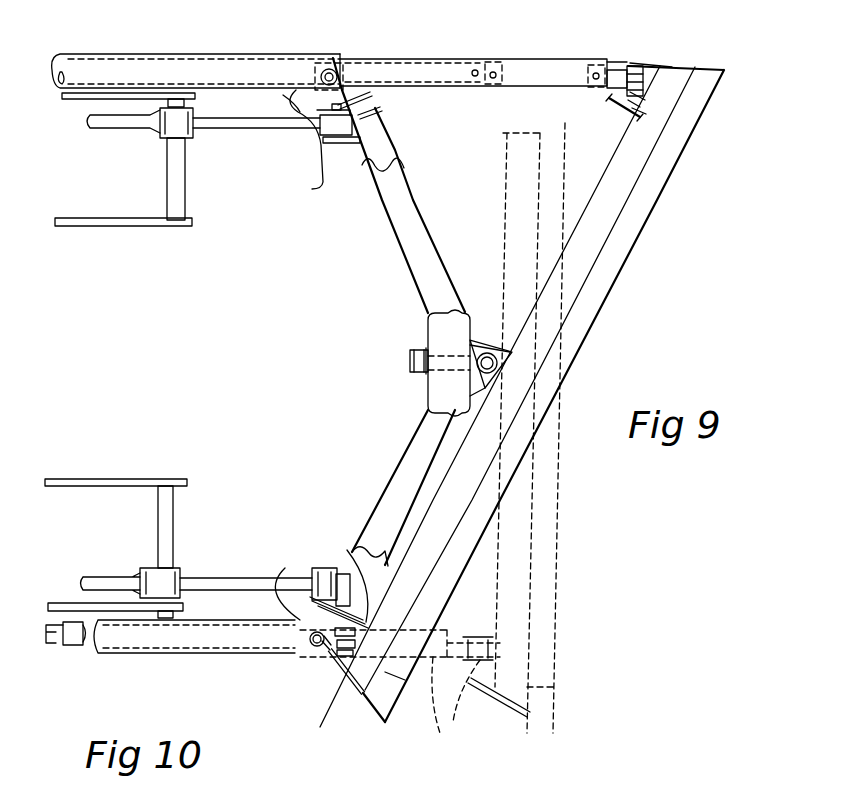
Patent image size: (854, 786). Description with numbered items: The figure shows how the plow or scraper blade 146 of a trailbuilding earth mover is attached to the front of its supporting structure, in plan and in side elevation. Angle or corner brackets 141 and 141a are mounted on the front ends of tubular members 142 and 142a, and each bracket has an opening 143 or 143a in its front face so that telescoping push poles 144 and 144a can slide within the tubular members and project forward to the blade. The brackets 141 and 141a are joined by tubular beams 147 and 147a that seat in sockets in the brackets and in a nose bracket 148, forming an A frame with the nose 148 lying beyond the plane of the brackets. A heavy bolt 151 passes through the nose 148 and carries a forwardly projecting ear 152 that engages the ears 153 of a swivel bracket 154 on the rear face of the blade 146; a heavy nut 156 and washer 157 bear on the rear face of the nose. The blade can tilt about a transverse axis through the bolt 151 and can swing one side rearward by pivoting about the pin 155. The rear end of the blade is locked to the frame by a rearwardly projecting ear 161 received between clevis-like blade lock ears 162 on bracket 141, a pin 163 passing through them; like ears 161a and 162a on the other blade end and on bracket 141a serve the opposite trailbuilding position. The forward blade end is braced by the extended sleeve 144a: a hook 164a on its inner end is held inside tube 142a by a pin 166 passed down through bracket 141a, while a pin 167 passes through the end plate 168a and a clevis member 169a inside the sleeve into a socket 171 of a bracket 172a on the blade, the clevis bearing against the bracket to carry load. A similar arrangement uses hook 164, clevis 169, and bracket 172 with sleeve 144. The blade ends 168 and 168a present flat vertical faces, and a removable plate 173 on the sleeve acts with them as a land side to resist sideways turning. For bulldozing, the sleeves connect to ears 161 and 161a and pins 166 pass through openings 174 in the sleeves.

In FIG. 10, the angle or corner bracket 141 is at (293, 616).
In FIG. 9, the angle or corner bracket 141a is at (322, 180).
In FIG. 10, the tubular member 142 is at (188, 640).
In FIG. 9, the tubular member 142a is at (190, 62).
In FIG. 10, the opening 143 is at (335, 628).
In FIG. 9, the opening 143a is at (345, 67).
In FIG. 10, the telescoping push pole 144 is at (76, 646).
In FIG. 9, the telescoping push pole 144a is at (551, 80).
In FIG. 9, the plow or scraper blade 146 is at (575, 318).
In FIG. 10, the tubular beam 147 is at (392, 500).
In FIG. 9, the tubular beam 147a is at (400, 246).
In FIG. 9, the nose bracket 148 is at (483, 386).
In FIG. 9, the heavy bolt 151 is at (490, 372).
In FIG. 9, the forwardly projecting ear 152 is at (470, 340).
In FIG. 9, the ears 153 is at (468, 347).
In FIG. 9, the swivel bracket 154 is at (470, 350).
In FIG. 9, the pin 155 is at (476, 396).
In FIG. 9, the heavy nut 156 is at (418, 364).
In FIG. 9, the washer 157 is at (428, 378).
In FIG. 10, the rearwardly projecting plate or ear 161 is at (347, 570).
In FIG. 9, the ear 161a is at (646, 118).
In FIG. 10, the clevis-like ears or blade locks 162 is at (338, 590).
In FIG. 9, the ears 162a is at (360, 94).
In FIG. 10, the pin 163 is at (342, 578).
In FIG. 10, the hook 164 is at (50, 645).
In FIG. 9, the hook 164a is at (327, 68).
In FIG. 9, the pin 166 is at (329, 68).
In FIG. 9, the pin 167 is at (622, 68).
In FIG. 10, the blade end 168 is at (352, 672).
In FIG. 9, the blade end 168a is at (692, 44).
In FIG. 10, the clevis member 169 is at (340, 642).
In FIG. 9, the clevis member 169a is at (646, 104).
In FIG. 9, the socket 171 is at (644, 110).
In FIG. 10, the bracket 172 is at (345, 656).
In FIG. 9, the bracket 172a is at (645, 99).
In FIG. 9, the removable plate 173 is at (552, 60).
In FIG. 9, the openings 174 is at (477, 70).